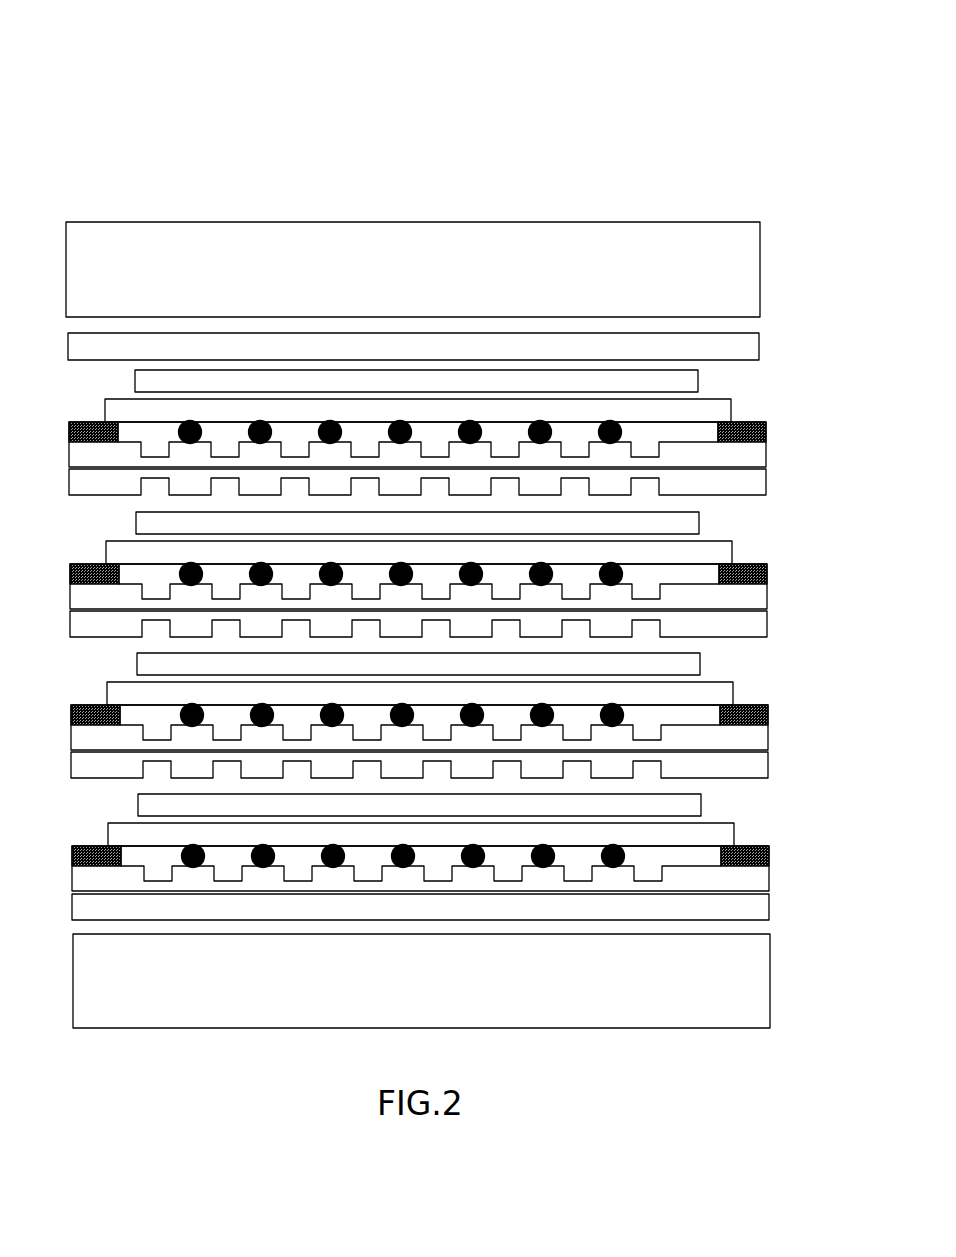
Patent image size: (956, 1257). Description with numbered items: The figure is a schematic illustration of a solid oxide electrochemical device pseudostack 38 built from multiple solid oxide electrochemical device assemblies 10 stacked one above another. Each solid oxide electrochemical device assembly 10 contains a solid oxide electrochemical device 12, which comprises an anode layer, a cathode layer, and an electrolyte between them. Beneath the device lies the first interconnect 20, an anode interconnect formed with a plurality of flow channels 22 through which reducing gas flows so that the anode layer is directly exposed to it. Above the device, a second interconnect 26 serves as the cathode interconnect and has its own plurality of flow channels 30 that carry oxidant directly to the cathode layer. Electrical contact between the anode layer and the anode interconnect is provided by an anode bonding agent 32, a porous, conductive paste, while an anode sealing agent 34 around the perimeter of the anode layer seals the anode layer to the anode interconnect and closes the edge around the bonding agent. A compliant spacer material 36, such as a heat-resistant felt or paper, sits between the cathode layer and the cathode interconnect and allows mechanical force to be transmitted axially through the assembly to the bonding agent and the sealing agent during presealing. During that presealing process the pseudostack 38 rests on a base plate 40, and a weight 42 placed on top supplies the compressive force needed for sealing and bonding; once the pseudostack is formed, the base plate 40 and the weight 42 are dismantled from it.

The solid oxide electrochemical device assembly 10 is at (57, 372).
The solid oxide electrochemical device 12 is at (722, 411).
The first interconnect 20 is at (756, 483).
The flow channels 22 is at (416, 641).
The second interconnect 26 is at (755, 346).
The flow channels 30 is at (394, 602).
The anode bonding agent 32 is at (612, 441).
The anode sealing agent 34 is at (87, 423).
The spacer material 36 is at (688, 386).
The solid oxide electrochemical device pseudostack 38 is at (160, 58).
The base plate 40 is at (762, 988).
The weight 42 is at (752, 274).